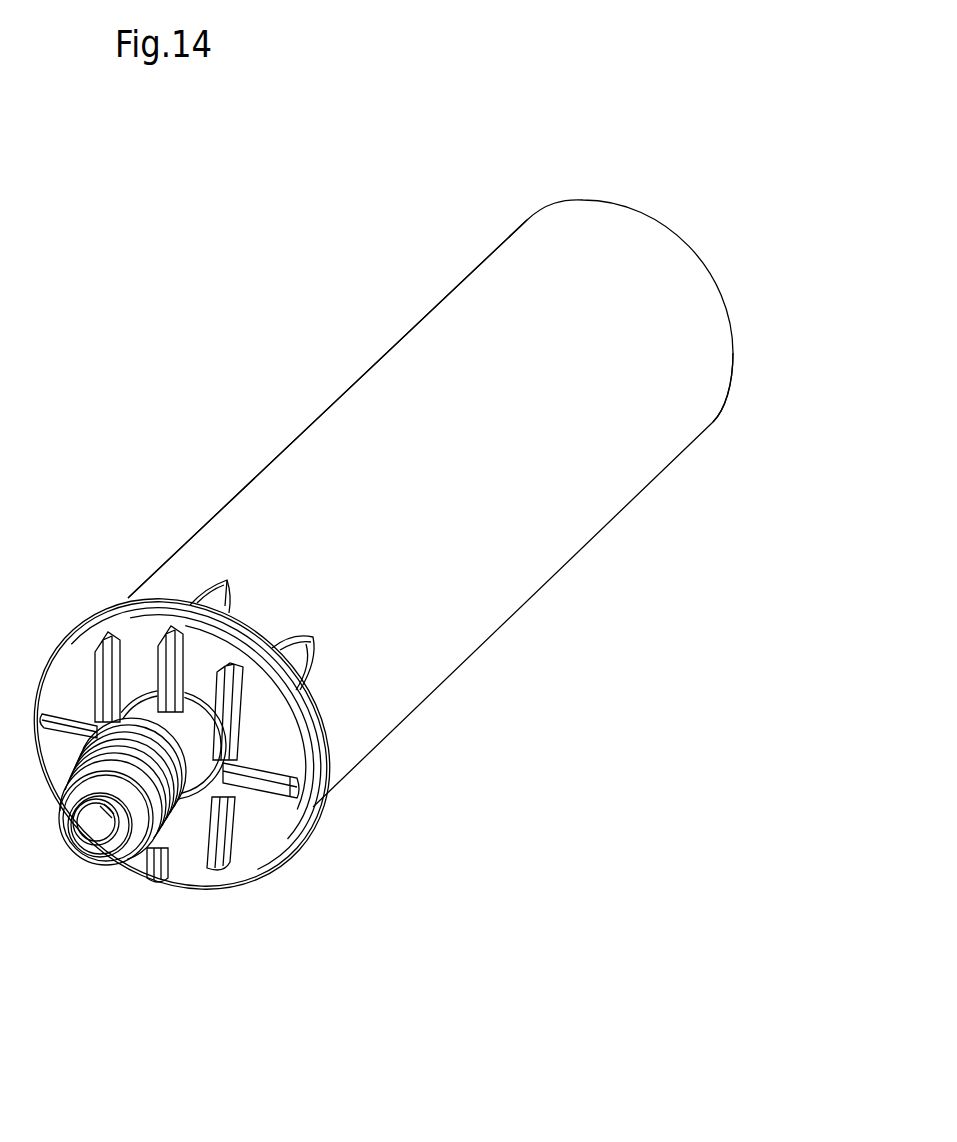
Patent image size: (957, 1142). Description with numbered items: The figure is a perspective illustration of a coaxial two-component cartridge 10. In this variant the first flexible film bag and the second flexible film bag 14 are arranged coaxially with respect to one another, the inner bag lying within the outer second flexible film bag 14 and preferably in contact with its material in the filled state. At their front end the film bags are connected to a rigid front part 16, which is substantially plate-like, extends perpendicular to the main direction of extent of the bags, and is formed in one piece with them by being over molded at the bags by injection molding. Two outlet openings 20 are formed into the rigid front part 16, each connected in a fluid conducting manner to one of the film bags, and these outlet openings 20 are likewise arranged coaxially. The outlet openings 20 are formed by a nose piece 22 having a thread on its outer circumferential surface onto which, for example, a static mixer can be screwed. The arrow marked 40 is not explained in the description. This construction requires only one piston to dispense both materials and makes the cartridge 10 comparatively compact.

The cartridge 10 is at (641, 159).
The second flexible film bag 14 is at (527, 565).
The rigid front part 16 is at (268, 832).
The outlet opening 20 is at (90, 826).
The nose piece 22 is at (168, 846).
The viewing direction indicator 40 is at (797, 397).